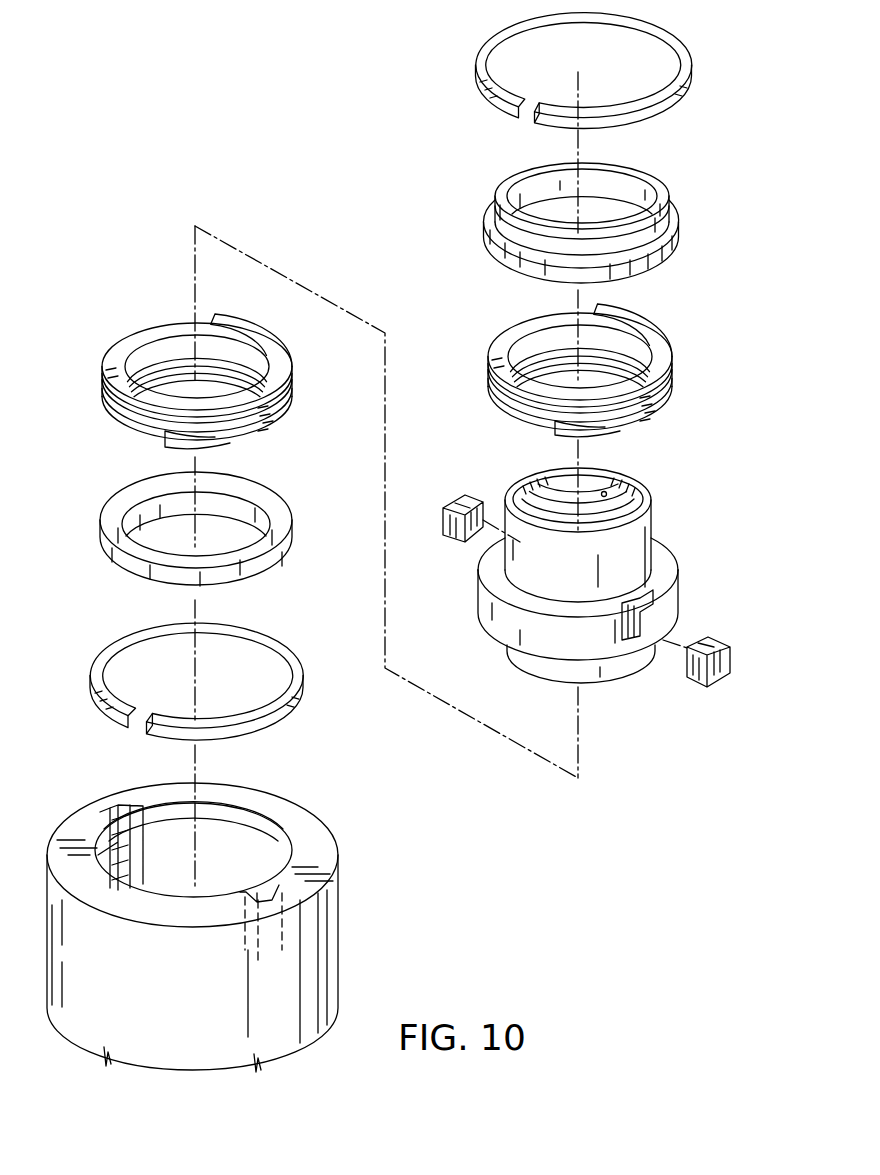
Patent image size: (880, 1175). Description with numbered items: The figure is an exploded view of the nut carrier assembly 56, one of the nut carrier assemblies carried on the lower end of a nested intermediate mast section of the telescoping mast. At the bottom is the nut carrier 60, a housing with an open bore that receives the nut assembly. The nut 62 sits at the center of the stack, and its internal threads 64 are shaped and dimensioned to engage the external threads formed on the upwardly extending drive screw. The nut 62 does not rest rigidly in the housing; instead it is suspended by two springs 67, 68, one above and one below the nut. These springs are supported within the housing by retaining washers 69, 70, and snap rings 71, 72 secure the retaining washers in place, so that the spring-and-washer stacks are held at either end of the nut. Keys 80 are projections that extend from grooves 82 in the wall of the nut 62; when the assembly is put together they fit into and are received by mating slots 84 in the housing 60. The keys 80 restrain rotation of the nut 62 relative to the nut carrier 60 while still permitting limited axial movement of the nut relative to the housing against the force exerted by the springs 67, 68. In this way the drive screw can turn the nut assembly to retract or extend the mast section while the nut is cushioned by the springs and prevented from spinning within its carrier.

The nut carrier assembly 56 is at (231, 909).
The nut carrier 60 is at (231, 909).
The nut 62 is at (609, 565).
The internal threads 64 is at (606, 493).
The spring 67 is at (665, 352).
The spring 68 is at (110, 353).
The retaining washer 69 is at (670, 205).
The retaining washer 70 is at (100, 530).
The snap ring 71 is at (684, 63).
The snap ring 72 is at (100, 657).
The key 80 is at (457, 502).
The groove 82 is at (640, 622).
The slot 84 is at (123, 808).